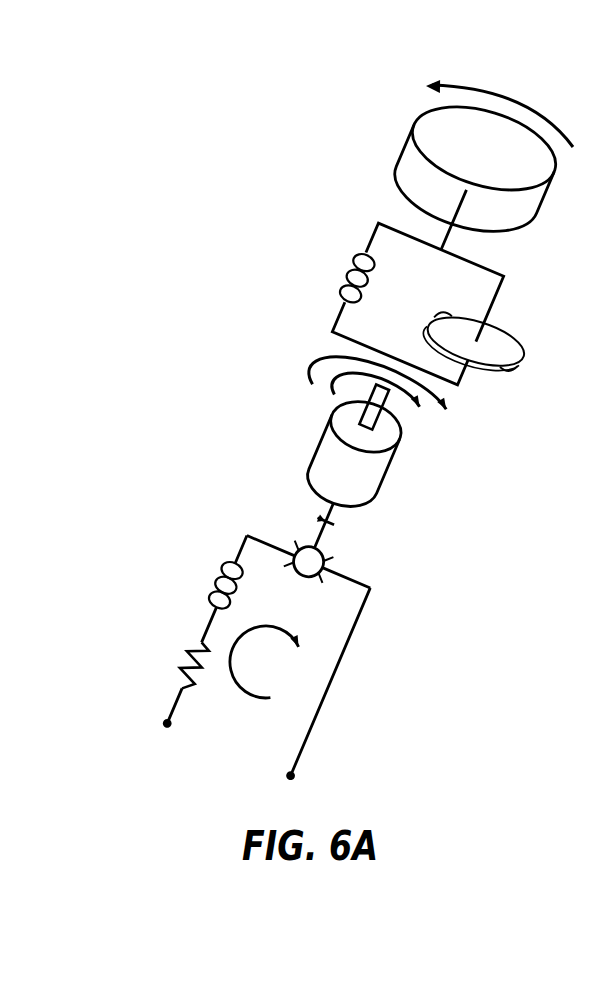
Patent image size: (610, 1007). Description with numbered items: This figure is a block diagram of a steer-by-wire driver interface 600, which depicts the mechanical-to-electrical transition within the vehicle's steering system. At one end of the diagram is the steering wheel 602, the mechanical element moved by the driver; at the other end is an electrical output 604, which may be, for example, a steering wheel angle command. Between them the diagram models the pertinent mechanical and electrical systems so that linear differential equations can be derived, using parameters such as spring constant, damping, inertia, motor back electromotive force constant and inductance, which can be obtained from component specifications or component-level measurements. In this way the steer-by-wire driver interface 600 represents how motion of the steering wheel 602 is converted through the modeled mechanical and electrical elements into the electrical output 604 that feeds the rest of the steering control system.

The steer-by-wire driver interface 600 is at (277, 178).
The steering wheel 602 is at (410, 142).
The electrical output 604 is at (228, 732).